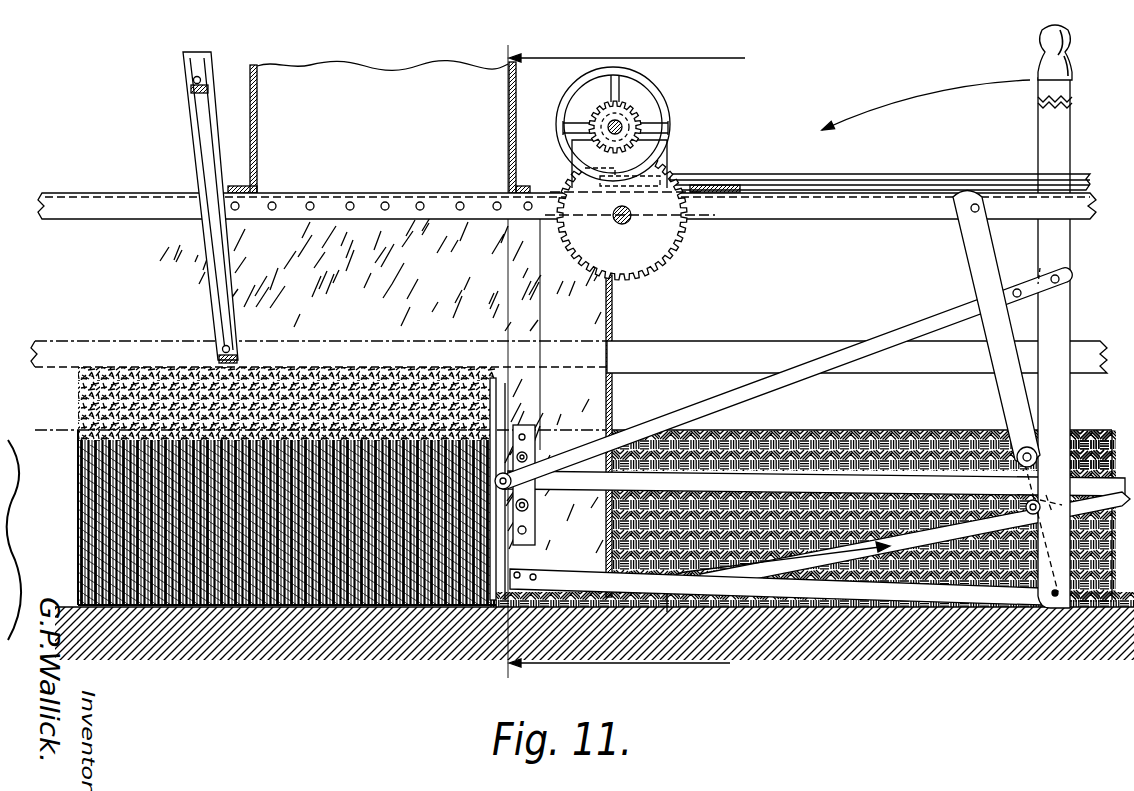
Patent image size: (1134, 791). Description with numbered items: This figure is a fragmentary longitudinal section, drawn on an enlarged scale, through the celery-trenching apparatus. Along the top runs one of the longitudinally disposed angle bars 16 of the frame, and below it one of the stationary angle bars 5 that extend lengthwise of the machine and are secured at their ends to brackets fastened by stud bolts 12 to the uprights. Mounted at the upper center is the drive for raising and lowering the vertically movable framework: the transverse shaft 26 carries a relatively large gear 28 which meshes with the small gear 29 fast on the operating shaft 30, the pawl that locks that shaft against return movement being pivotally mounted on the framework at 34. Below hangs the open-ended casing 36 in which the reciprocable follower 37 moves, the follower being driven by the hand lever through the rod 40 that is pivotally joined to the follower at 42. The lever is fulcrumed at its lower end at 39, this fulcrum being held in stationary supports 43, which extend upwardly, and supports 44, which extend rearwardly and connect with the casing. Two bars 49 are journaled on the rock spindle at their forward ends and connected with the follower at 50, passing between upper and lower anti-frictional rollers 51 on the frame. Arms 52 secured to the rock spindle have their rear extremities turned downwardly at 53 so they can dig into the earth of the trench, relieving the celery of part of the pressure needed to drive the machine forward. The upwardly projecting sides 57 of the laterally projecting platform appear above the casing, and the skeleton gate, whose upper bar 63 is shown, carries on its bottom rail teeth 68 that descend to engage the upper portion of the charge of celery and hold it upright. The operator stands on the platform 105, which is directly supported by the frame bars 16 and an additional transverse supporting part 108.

The angle bar 5 is at (894, 374).
The stud bolt 12 is at (642, 360).
The longitudinal angle bar 16 is at (112, 208).
The transverse shaft 26 is at (624, 222).
The large gear 28 is at (670, 252).
The small gear 29 is at (638, 113).
The operating shaft 30 is at (632, 128).
The pawl pivot 34 is at (652, 91).
The casing 36 is at (190, 322).
The follower 37 is at (492, 408).
The fulcrum 39 is at (1057, 606).
The rod 40 is at (892, 338).
The pivotal connection 42 is at (540, 462).
The upward support 43 is at (982, 327).
The rearward support 44 is at (868, 592).
The bar 49 is at (797, 478).
The bar-to-follower connection 50 is at (826, 539).
The anti-frictional roller 51 is at (1013, 440).
The arm 52 is at (985, 530).
The downturned arm extremity 53 is at (668, 612).
The platform side 57 is at (258, 128).
The upper bar 63 is at (202, 92).
The tooth 68 is at (234, 368).
The platform 105 is at (851, 178).
The transverse supporting part 108 is at (748, 152).